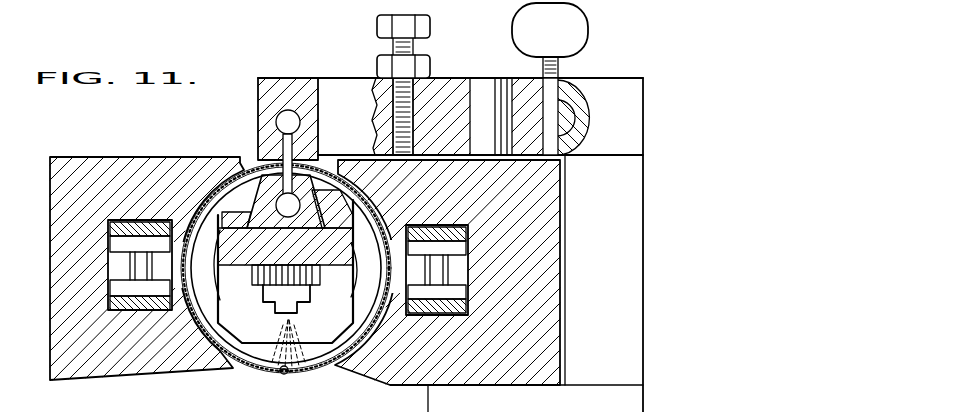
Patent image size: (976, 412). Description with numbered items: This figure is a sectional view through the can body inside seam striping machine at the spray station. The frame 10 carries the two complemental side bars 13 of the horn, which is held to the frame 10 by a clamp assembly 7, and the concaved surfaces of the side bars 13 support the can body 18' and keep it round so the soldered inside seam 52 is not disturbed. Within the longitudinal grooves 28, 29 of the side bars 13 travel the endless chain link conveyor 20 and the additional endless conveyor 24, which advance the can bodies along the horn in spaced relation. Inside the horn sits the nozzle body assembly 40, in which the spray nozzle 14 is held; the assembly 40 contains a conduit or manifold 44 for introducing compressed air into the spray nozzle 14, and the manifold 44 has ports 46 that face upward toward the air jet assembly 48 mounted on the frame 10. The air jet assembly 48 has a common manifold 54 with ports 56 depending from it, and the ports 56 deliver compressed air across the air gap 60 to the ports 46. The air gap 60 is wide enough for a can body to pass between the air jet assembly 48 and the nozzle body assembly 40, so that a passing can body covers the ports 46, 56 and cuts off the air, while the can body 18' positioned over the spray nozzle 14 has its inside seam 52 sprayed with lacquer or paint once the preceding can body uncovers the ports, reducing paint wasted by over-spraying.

The clamp assembly 7 is at (603, 78).
The frame 10 is at (643, 318).
The side bar 13 is at (120, 157).
The spray nozzle 14 is at (312, 295).
The can body 18' is at (307, 384).
The endless chain link conveyor 20 is at (466, 316).
The endless conveyor 24 is at (125, 310).
The longitudinal groove 28 is at (470, 268).
The longitudinal groove 29 is at (108, 250).
The nozzle body assembly 40 is at (236, 258).
The conduit or manifold 44 is at (353, 246).
The port 46 is at (321, 157).
The air jet assembly 48 is at (258, 108).
The inside seam 52 is at (276, 370).
The common manifold 54 is at (288, 110).
The port 56 is at (283, 148).
The air gap 60 is at (262, 166).